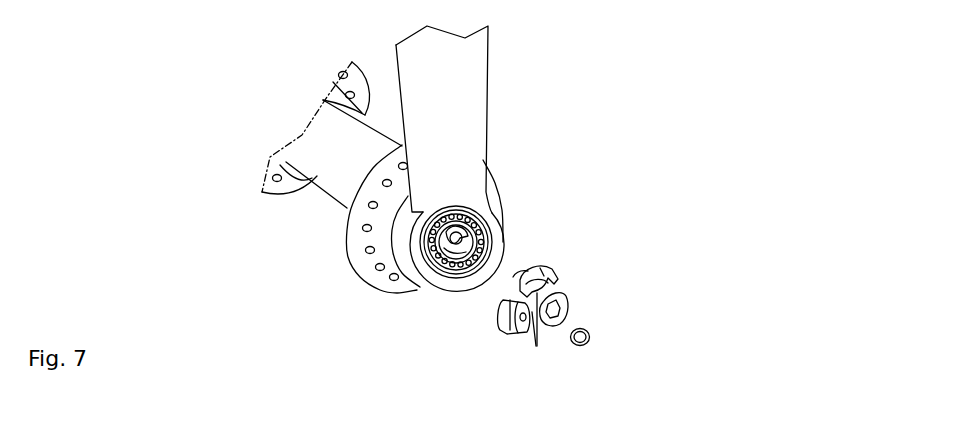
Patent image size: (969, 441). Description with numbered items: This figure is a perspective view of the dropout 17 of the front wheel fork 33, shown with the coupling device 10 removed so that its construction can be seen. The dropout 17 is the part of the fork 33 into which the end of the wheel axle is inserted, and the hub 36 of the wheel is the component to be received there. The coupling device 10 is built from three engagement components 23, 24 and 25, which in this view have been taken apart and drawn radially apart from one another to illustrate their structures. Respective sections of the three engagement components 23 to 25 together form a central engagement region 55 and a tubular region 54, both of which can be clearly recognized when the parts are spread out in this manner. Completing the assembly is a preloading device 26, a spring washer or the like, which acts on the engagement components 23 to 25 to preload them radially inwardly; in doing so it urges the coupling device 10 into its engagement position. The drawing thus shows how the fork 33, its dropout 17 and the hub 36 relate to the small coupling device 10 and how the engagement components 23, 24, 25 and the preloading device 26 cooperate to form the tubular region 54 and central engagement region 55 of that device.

The coupling device 10 is at (575, 282).
The dropout 17 is at (505, 195).
The engagement component 23 is at (552, 272).
The engagement component 24 is at (497, 312).
The engagement component 25 is at (568, 307).
The preloading device 26 is at (592, 337).
The front wheel fork 33 is at (475, 55).
The hub 36 is at (331, 178).
The tubular region 54 is at (513, 277).
The central engagement region 55 is at (540, 331).